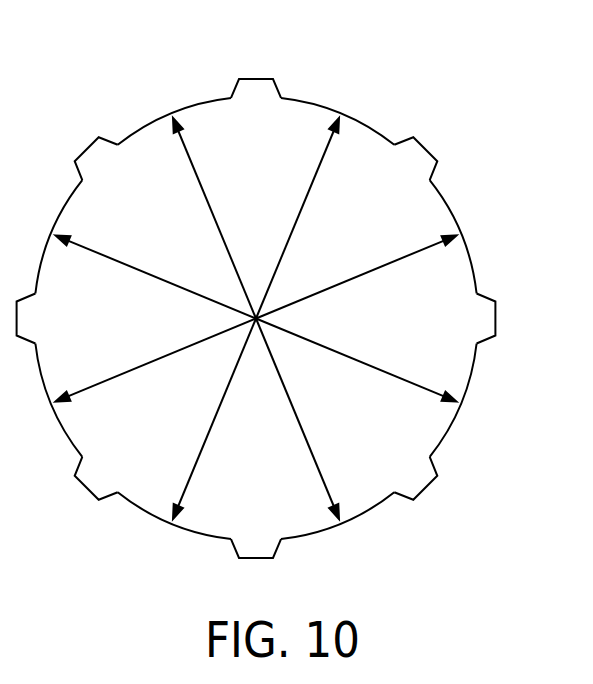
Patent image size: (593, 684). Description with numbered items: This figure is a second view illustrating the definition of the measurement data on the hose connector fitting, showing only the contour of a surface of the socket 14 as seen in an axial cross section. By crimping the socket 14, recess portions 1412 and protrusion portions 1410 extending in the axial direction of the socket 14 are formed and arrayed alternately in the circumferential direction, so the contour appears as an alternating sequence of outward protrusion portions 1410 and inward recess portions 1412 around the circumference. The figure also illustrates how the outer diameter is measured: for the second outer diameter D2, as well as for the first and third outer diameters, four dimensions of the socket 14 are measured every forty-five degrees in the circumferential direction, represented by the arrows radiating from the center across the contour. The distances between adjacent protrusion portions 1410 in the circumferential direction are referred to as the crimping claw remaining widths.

The socket 14 is at (280, 286).
The protrusion portions 1410 is at (263, 78).
The recess portions 1412 is at (147, 117).
The second outer diameter D2 is at (308, 182).